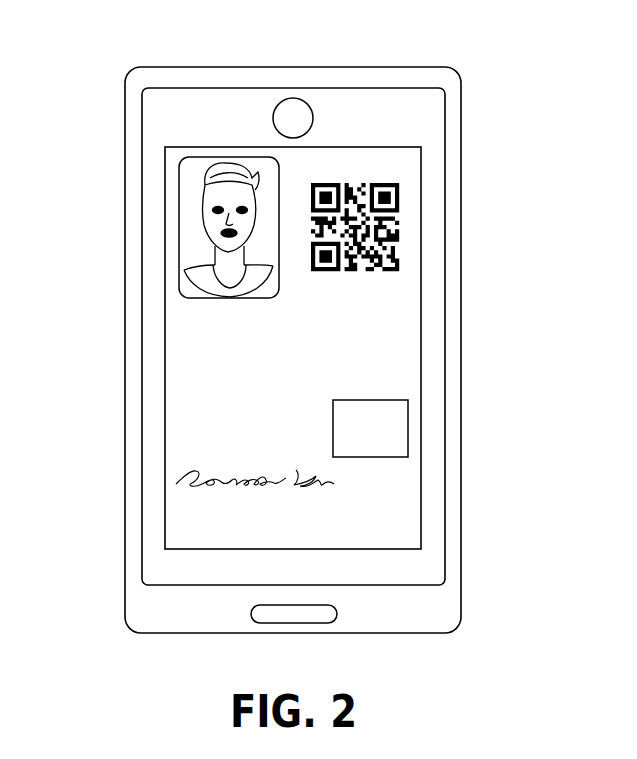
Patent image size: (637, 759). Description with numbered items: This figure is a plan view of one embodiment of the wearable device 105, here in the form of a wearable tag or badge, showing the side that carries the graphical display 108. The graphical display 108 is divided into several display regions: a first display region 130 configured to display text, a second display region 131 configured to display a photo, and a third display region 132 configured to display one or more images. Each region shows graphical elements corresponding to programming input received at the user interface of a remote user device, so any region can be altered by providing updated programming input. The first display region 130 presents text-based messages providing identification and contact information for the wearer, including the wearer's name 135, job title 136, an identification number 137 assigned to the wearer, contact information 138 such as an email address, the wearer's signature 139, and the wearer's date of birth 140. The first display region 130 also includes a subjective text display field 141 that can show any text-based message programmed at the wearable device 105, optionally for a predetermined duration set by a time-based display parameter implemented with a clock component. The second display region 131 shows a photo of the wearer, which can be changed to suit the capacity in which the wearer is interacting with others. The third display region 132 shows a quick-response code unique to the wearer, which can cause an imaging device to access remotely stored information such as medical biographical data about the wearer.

The wearable device 105 is at (288, 52).
The graphical display 108 is at (405, 341).
The first display region 130 is at (183, 400).
The second display region 131 is at (167, 255).
The third display region 132 is at (407, 240).
The name 135 is at (175, 313).
The job title 136 is at (173, 333).
The identification number 137 is at (177, 367).
The contact information 138 is at (177, 437).
The signature 139 is at (188, 497).
The date of birth 140 is at (412, 385).
The subjective text display field 141 is at (410, 445).